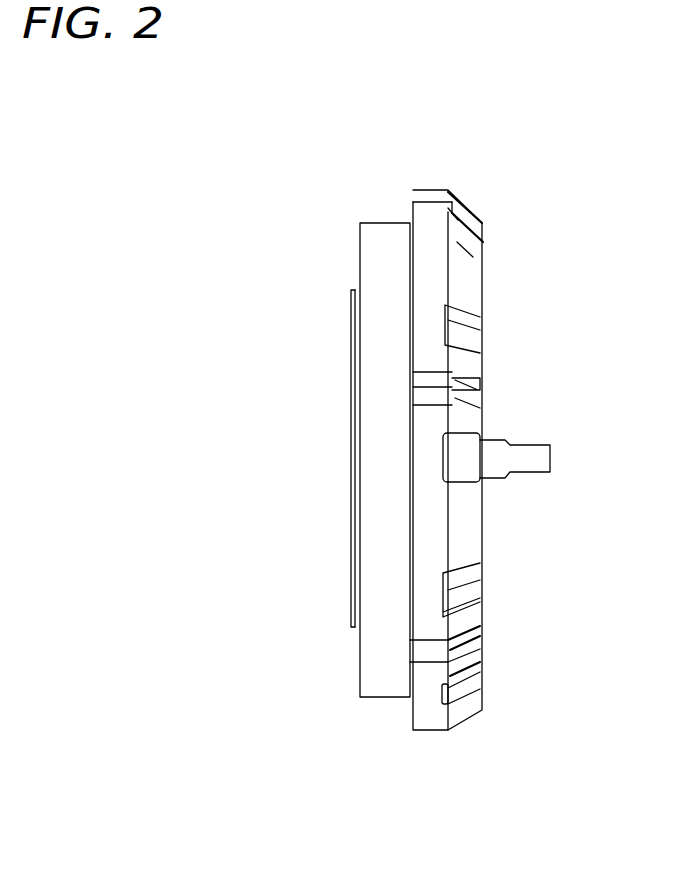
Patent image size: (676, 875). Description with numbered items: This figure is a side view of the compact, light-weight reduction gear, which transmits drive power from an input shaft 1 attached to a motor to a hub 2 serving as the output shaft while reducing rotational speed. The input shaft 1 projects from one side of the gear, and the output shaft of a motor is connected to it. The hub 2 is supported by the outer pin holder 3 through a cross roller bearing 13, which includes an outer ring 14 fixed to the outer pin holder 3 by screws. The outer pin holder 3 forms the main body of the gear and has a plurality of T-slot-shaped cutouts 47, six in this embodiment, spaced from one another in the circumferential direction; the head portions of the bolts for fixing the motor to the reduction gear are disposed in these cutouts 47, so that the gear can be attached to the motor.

The input shaft 1 is at (525, 452).
The hub 2 is at (353, 497).
The outer pin holder 3 is at (430, 282).
The cross roller bearing 13 is at (376, 258).
The outer ring 14 is at (377, 410).
The T-slot-shaped cutouts 47 is at (435, 395).